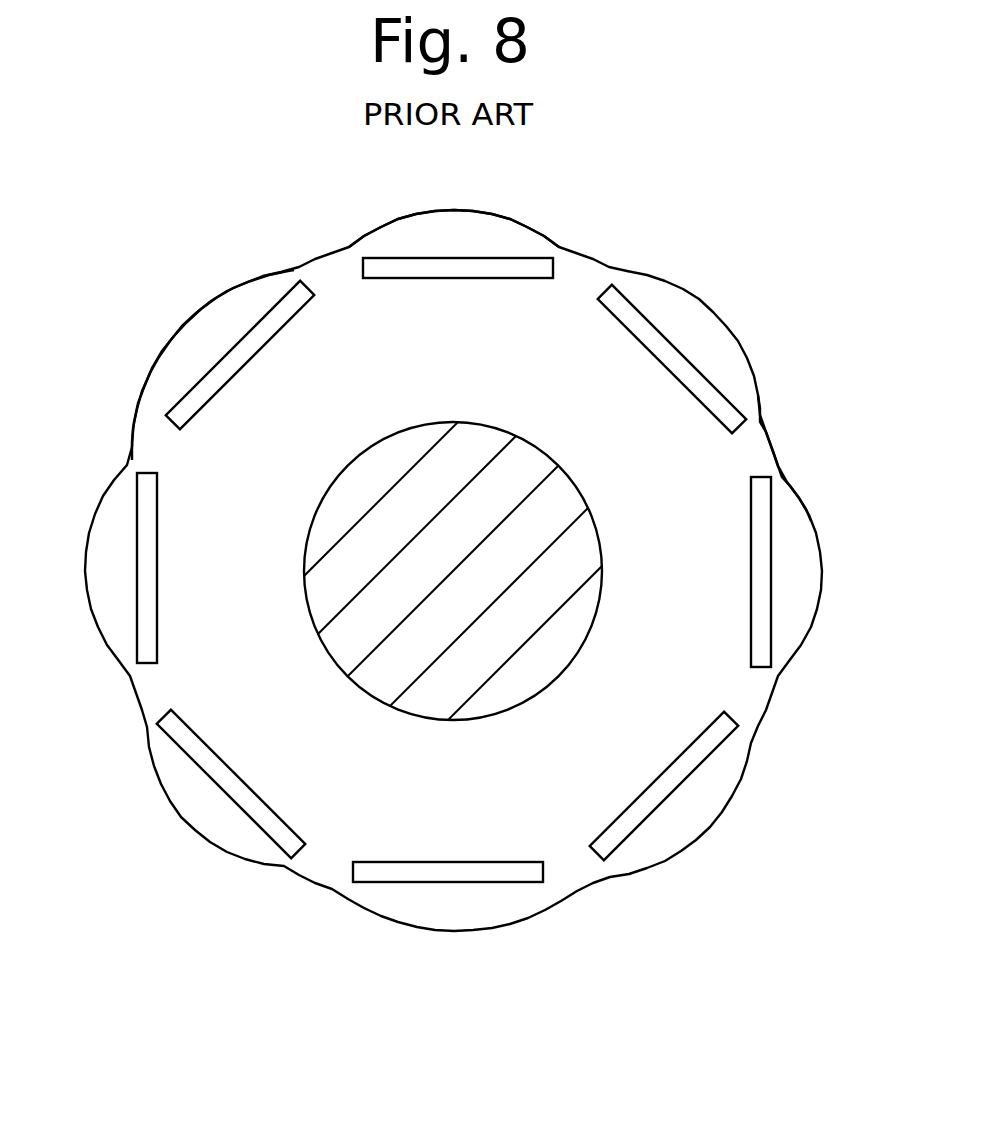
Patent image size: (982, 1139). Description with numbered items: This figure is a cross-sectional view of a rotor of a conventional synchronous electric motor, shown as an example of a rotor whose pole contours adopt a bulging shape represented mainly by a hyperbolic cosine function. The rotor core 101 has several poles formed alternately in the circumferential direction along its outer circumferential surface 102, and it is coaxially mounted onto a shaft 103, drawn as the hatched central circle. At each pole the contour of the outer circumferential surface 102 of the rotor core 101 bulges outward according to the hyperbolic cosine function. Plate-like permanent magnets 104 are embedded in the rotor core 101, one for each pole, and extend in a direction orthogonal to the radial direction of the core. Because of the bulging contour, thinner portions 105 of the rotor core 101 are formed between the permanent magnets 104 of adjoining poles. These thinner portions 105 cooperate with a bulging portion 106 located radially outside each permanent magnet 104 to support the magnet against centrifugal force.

The rotor core 101 is at (733, 322).
The outer circumferential surface 102 is at (387, 222).
The shaft 103 is at (388, 663).
The permanent magnets 104 is at (538, 270).
The thinner portions 105 is at (753, 425).
The bulging portion 106 is at (183, 350).